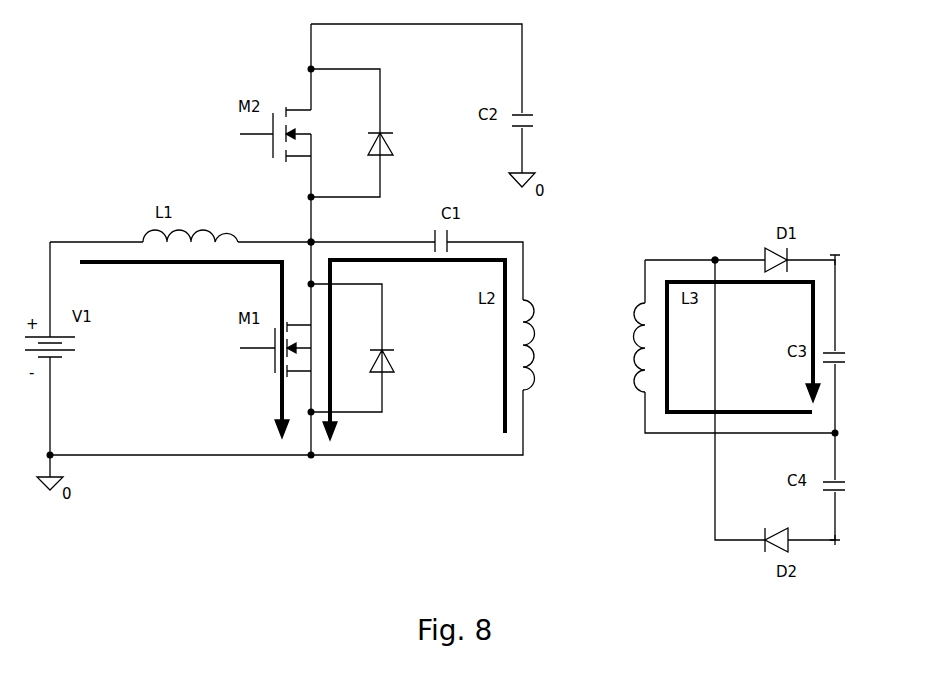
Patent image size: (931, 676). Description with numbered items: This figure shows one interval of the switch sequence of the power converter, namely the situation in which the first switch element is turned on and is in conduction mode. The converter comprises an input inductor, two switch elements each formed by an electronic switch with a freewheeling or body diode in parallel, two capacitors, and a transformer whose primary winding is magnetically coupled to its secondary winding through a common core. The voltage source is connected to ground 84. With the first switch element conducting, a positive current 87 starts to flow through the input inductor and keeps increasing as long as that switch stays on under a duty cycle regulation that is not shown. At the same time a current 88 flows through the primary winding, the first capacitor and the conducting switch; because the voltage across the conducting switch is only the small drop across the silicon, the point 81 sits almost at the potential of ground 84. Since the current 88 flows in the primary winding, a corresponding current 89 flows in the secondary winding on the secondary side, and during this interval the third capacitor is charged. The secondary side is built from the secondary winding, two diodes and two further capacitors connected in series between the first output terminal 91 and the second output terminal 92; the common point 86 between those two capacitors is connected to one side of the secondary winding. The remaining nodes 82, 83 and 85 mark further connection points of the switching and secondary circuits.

The point 81 is at (311, 242).
The node between M2 and M1 body diode 82 is at (311, 197).
The output node 83 is at (311, 69).
The ground 84 is at (50, 455).
The node 85 is at (715, 260).
The common point 86 is at (835, 433).
The positive current 87 is at (97, 262).
The current 88 is at (420, 260).
The current 89 is at (667, 282).
The first output terminal 91 is at (835, 260).
The second output terminal 92 is at (835, 540).